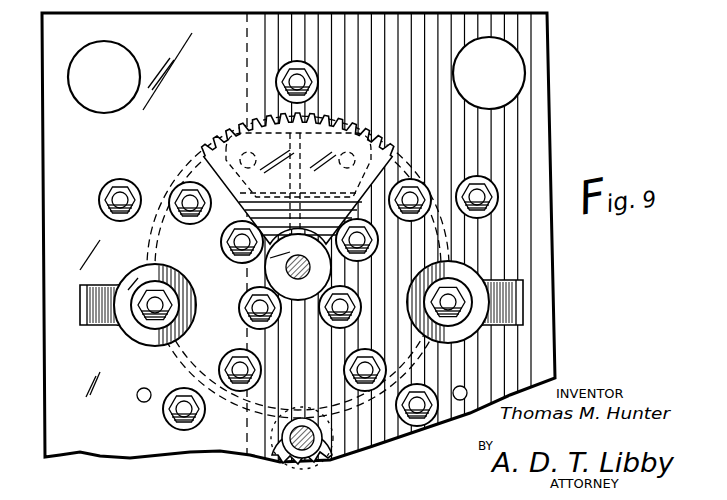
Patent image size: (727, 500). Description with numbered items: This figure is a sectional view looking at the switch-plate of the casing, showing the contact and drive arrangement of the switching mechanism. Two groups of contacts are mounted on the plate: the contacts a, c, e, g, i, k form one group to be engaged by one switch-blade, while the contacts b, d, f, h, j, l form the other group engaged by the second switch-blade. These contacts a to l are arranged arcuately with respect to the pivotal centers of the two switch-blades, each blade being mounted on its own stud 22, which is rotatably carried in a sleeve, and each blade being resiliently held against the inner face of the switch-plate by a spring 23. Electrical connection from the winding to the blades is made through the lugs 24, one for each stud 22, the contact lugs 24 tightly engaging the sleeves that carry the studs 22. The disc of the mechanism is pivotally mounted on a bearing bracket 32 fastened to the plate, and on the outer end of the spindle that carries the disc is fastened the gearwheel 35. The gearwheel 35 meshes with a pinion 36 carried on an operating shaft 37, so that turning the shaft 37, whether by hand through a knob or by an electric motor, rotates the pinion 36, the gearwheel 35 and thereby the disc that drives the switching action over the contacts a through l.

The stud 22 is at (128, 337).
The spring 23 is at (74, 345).
The lug 24 is at (82, 311).
The bearing bracket 32 is at (220, 147).
The gearwheel 35 is at (243, 130).
The pinion 36 is at (272, 449).
The operating shaft 37 is at (304, 462).
The contact a is at (100, 208).
The contact b is at (417, 428).
The contact c is at (188, 222).
The contact d is at (348, 372).
The contact e is at (222, 248).
The contact f is at (325, 327).
The contact g is at (240, 310).
The contact h is at (372, 256).
The contact i is at (224, 362).
The contact j is at (411, 221).
The contact k is at (184, 392).
The contact l is at (475, 218).